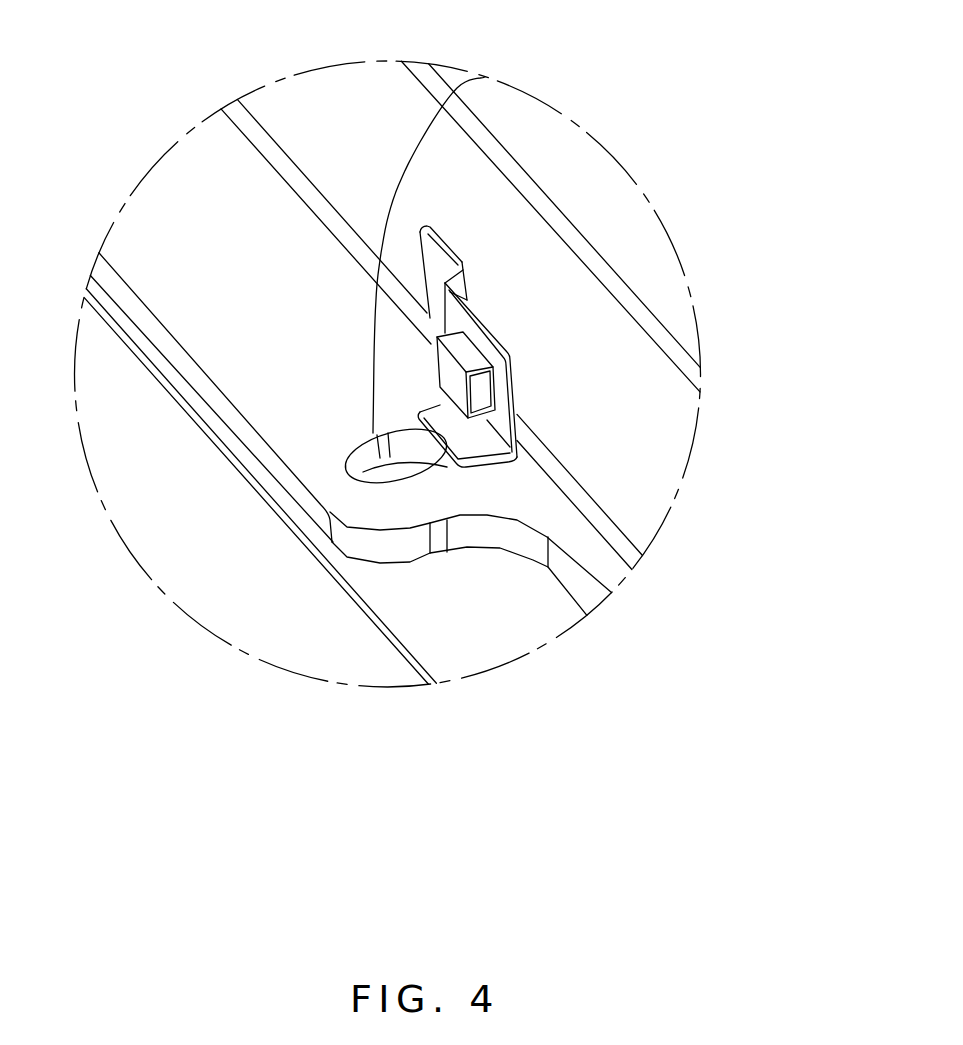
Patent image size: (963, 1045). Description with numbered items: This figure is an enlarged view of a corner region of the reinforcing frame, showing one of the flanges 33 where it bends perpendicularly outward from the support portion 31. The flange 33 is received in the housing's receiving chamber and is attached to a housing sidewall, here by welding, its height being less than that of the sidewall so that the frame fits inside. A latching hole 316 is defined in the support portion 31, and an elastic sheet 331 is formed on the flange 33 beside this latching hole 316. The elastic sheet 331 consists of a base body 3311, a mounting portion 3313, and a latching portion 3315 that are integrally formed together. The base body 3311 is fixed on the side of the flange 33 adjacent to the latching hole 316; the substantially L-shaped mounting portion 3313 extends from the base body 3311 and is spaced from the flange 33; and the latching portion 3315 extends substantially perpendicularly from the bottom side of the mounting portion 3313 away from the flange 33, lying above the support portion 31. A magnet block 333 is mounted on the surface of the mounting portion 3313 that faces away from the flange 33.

The support portion 31 is at (205, 143).
The latching hole 316 is at (483, 76).
The flange 33 is at (387, 88).
The elastic sheet 331 is at (815, 97).
The base body 3311 is at (440, 243).
The mounting portion 3313 is at (490, 340).
The latching portion 3315 is at (480, 460).
The magnet block 333 is at (478, 393).